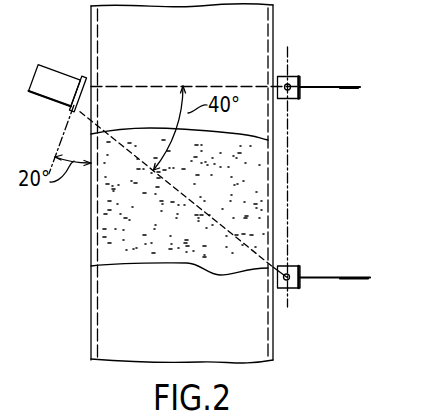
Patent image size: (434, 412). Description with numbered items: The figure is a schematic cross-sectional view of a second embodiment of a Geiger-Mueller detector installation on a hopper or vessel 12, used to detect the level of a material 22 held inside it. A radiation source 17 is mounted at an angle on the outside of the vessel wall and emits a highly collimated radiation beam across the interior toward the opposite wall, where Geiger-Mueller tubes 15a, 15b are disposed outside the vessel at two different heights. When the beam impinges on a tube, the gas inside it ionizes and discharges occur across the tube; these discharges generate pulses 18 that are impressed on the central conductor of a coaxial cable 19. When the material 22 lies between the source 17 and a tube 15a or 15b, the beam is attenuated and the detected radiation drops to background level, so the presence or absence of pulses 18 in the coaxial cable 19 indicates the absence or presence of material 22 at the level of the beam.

The hopper or vessel 12 is at (290, 197).
The Geiger-Mueller tube 15a is at (293, 76).
The Geiger-Mueller tube 15b is at (293, 266).
The radiation source 17 is at (56, 69).
The pulses 18 is at (318, 67).
The coaxial cable 19 is at (351, 89).
The material 22 is at (113, 240).